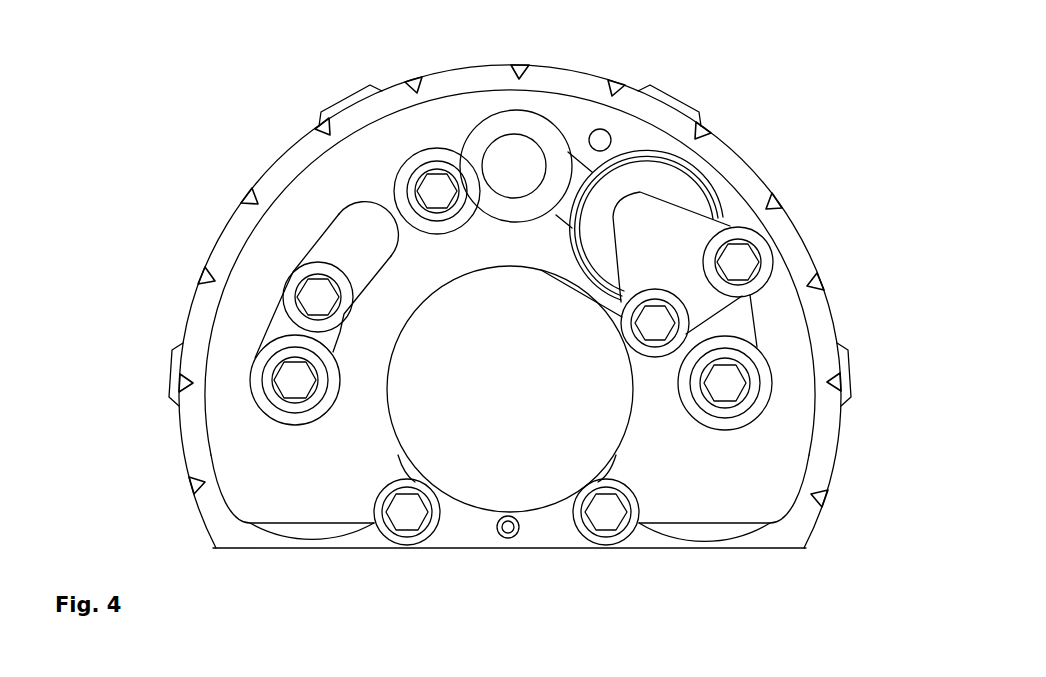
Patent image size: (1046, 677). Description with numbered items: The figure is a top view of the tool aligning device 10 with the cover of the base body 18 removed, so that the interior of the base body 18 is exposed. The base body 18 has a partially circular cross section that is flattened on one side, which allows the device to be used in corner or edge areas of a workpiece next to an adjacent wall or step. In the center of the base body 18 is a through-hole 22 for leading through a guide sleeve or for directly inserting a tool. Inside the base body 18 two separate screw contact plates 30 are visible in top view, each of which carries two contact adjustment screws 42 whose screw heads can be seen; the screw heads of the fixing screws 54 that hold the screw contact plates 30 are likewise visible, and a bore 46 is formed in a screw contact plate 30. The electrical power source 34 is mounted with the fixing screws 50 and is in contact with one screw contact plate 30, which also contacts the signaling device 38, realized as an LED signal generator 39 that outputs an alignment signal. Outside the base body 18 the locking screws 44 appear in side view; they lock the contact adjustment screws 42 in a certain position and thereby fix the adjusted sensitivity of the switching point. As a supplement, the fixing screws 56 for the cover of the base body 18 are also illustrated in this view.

The tool aligning device 10 is at (870, 166).
The base body 18 is at (279, 170).
The through-hole 22 is at (522, 404).
The screw contact plate 30 is at (287, 328).
The electrical power source 34 is at (673, 188).
The signaling device 38 is at (509, 152).
The LED signal generator 39 is at (514, 166).
The contact adjustment screw 42 is at (437, 182).
The locking screw 44 is at (360, 96).
The bore of screw contact plate 46 is at (318, 376).
The fixing screw for battery 50 is at (727, 257).
The fixing screw for second contact plate 54 is at (314, 293).
The fixing screw for cover of base body 56 is at (407, 520).